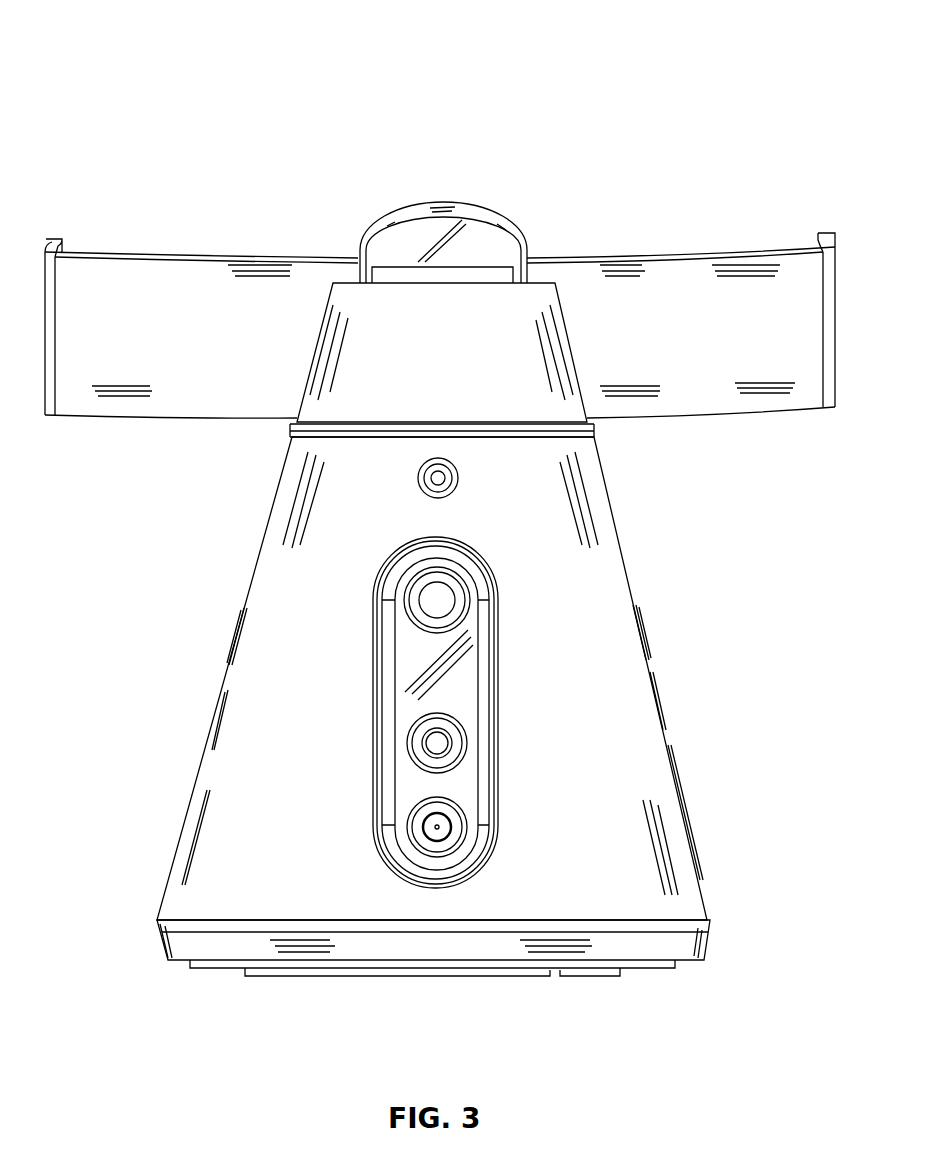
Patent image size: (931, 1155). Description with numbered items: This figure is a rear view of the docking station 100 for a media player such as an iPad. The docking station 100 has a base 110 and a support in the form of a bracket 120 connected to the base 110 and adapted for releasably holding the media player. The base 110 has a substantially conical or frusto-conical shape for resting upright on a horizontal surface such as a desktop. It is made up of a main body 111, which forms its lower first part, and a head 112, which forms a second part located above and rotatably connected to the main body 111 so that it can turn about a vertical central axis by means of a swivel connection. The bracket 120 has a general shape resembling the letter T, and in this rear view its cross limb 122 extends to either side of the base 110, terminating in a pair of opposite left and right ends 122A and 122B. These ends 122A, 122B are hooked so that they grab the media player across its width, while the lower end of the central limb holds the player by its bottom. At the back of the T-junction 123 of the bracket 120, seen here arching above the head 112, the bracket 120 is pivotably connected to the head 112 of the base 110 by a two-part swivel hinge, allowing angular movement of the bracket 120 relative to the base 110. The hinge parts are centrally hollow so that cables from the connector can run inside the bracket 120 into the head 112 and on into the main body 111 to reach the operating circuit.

The docking station 100 is at (248, 93).
The base 110 is at (688, 960).
The main body 111 is at (595, 567).
The head 112 is at (533, 358).
The bracket 120 is at (176, 420).
The cross limb 122 is at (664, 272).
The left end 122A is at (830, 232).
The right end 122B is at (50, 238).
The T-junction 123 is at (481, 213).